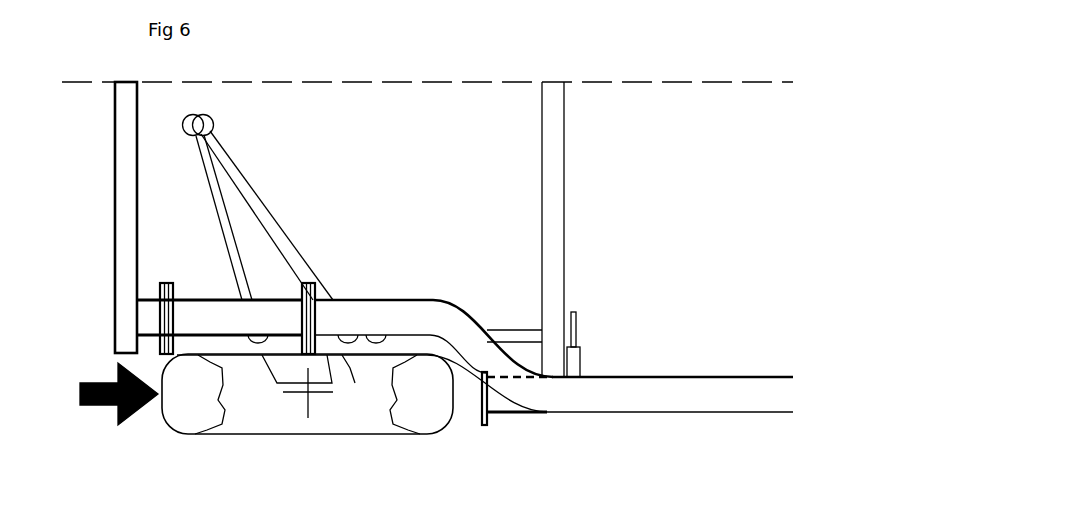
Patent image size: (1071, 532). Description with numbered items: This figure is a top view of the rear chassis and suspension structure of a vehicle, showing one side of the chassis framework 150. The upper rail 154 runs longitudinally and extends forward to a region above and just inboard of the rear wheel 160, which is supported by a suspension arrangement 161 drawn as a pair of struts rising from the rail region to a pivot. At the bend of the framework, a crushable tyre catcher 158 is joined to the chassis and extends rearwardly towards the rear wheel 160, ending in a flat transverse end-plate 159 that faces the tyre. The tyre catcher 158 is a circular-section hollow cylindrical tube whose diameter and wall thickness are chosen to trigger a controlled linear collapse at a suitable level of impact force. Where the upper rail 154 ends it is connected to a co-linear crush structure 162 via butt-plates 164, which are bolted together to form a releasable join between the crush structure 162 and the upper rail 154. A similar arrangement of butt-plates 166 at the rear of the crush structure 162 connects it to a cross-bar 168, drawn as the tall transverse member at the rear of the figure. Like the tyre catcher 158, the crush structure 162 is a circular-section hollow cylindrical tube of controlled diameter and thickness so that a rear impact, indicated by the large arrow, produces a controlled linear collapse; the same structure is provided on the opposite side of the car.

The chassis framework 150 is at (600, 368).
The upper rail 154 is at (629, 402).
The crushable tyre catcher 158 is at (510, 403).
The flat transverse end-plate 159 is at (482, 413).
The rear wheel 160 is at (290, 434).
The suspension arrangement 161 is at (270, 206).
The crush structure 162 is at (213, 297).
The butt-plates 164 is at (316, 290).
The butt-plates 166 is at (160, 286).
The cross-bar 168 is at (87, 217).